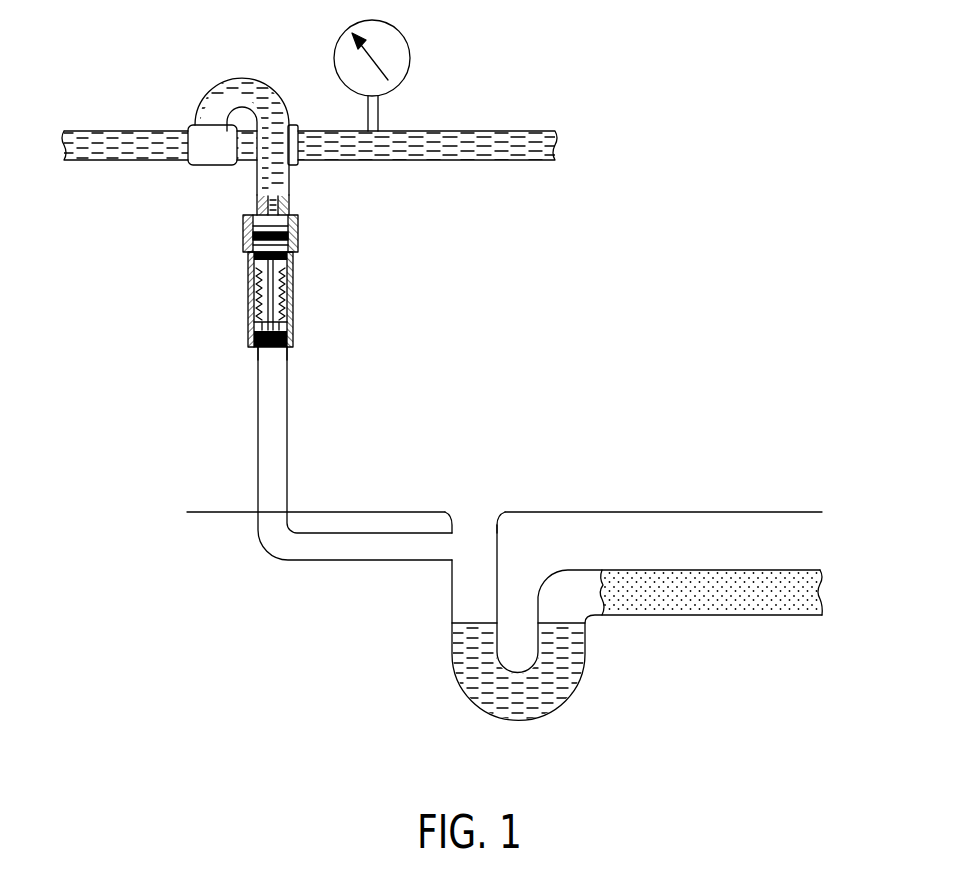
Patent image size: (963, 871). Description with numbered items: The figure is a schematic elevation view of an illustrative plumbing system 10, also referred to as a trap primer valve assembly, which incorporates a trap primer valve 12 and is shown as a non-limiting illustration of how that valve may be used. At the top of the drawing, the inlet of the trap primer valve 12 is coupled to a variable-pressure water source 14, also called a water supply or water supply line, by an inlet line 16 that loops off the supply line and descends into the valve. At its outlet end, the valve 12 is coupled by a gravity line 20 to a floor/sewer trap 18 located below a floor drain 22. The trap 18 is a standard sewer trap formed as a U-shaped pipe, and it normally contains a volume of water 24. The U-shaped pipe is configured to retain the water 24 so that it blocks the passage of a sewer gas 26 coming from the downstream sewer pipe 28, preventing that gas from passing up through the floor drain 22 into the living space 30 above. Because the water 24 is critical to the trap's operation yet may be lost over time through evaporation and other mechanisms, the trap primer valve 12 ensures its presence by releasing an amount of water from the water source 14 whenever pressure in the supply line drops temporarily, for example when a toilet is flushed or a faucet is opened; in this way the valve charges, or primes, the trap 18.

The plumbing system 10 is at (200, 192).
The trap primer valve 12 is at (233, 231).
The variable-pressure water source 14 is at (160, 130).
The inlet line 16 is at (263, 96).
The floor/sewer trap 18 is at (587, 622).
The gravity line 20 is at (338, 562).
The floor drain 22 is at (470, 500).
The water 24 is at (463, 648).
The sewer gas 26 is at (690, 605).
The sewer pipe 28 is at (733, 568).
The living space 30 is at (713, 344).